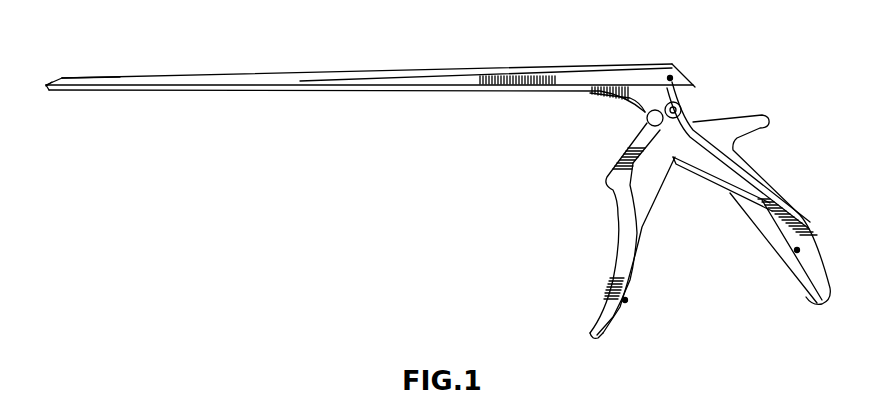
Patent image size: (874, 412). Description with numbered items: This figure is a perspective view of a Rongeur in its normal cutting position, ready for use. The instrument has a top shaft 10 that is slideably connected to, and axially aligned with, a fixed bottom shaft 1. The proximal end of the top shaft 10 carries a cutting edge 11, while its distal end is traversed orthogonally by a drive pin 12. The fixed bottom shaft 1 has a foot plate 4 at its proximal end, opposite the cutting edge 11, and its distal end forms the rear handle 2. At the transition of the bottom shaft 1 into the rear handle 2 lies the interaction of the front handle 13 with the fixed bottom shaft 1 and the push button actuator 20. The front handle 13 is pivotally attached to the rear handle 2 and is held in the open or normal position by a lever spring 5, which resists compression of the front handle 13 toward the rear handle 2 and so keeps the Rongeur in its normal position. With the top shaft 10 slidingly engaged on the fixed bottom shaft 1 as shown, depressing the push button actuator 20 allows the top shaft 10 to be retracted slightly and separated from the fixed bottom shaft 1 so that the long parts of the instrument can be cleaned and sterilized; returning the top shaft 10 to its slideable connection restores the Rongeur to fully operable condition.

The fixed bottom shaft 1 is at (300, 92).
The rear handle 2 is at (768, 188).
The foot plate 4 is at (50, 86).
The lever spring 5 is at (720, 192).
The top shaft 10 is at (326, 76).
The cutting edge 11 is at (64, 78).
The drive pin 12 is at (671, 64).
The front handle 13 is at (613, 190).
The push button actuator 20 is at (686, 103).